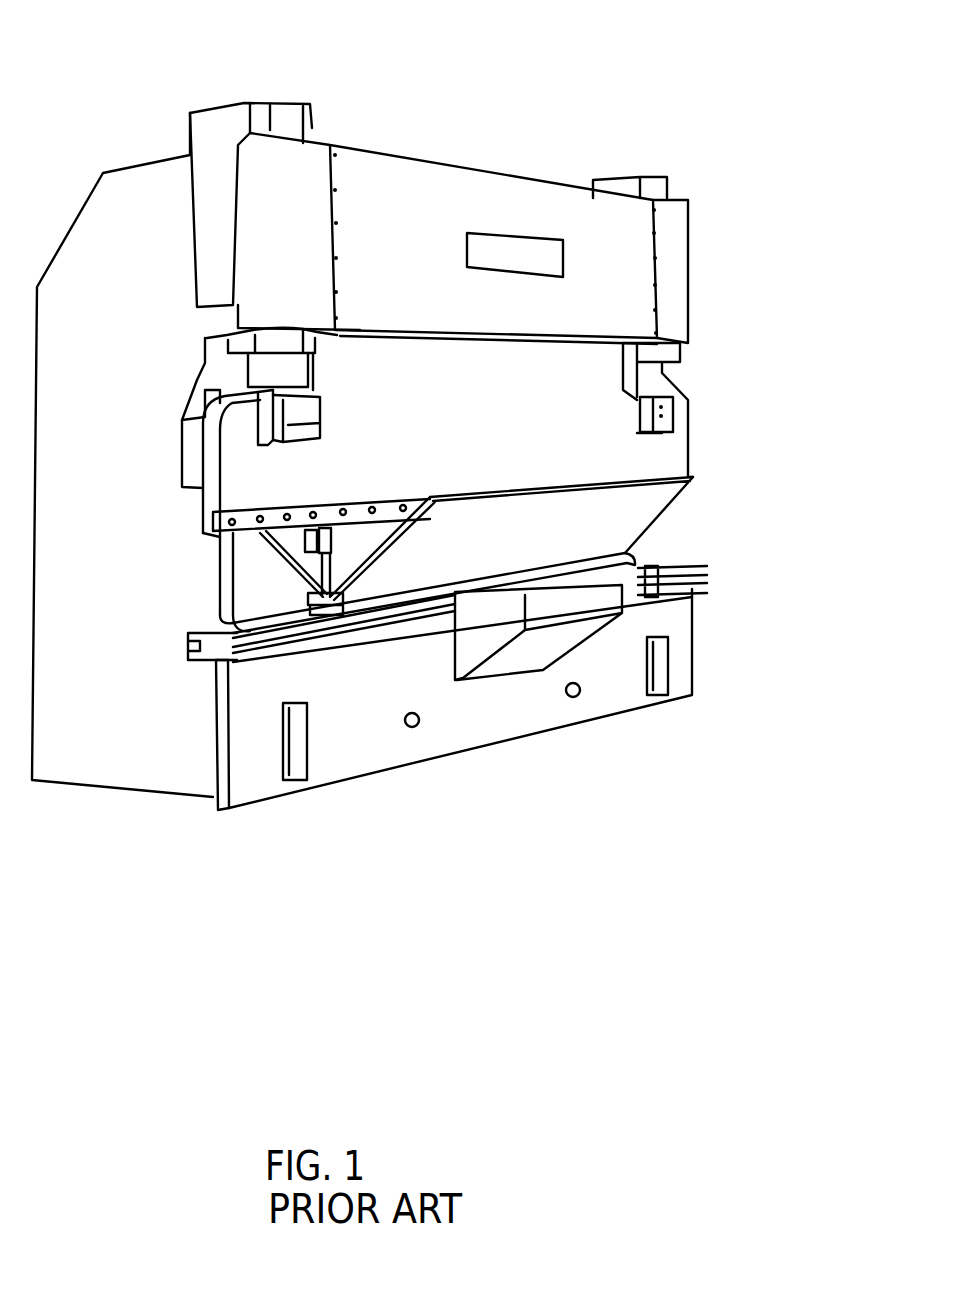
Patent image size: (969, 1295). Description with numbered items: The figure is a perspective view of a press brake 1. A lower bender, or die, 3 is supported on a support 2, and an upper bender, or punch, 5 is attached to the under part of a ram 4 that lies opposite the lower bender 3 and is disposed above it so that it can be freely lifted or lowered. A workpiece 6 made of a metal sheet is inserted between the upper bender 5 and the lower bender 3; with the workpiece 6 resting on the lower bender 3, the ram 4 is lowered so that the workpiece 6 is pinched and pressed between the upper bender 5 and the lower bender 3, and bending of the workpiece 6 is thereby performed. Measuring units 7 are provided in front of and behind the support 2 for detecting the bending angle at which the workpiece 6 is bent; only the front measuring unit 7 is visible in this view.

The press brake 1 is at (433, 405).
The support 2 is at (707, 585).
The lower bender (die) 3 is at (627, 557).
The ram 4 is at (322, 508).
The upper bender (punch) 5 is at (303, 587).
The workpiece 6 is at (627, 503).
The measuring unit 7 is at (550, 652).